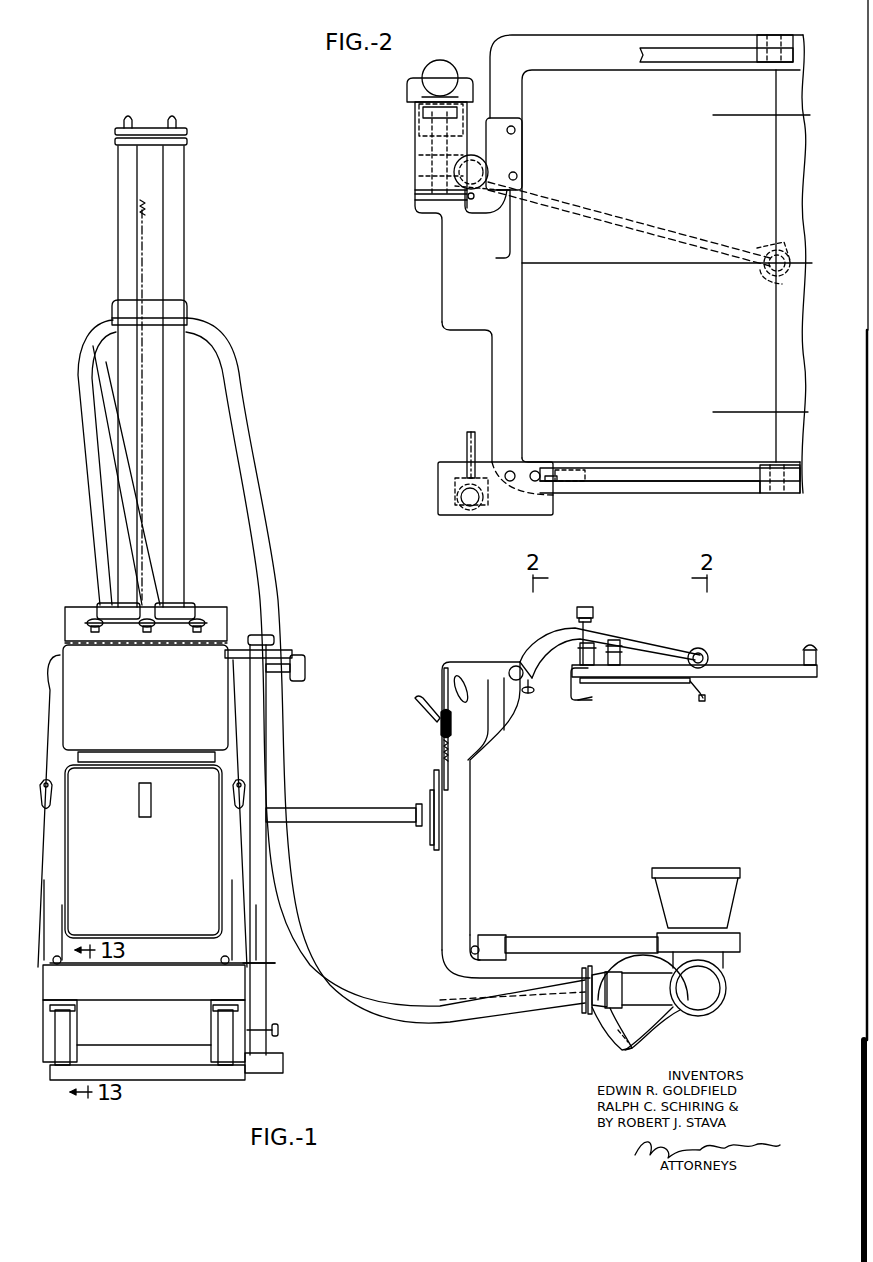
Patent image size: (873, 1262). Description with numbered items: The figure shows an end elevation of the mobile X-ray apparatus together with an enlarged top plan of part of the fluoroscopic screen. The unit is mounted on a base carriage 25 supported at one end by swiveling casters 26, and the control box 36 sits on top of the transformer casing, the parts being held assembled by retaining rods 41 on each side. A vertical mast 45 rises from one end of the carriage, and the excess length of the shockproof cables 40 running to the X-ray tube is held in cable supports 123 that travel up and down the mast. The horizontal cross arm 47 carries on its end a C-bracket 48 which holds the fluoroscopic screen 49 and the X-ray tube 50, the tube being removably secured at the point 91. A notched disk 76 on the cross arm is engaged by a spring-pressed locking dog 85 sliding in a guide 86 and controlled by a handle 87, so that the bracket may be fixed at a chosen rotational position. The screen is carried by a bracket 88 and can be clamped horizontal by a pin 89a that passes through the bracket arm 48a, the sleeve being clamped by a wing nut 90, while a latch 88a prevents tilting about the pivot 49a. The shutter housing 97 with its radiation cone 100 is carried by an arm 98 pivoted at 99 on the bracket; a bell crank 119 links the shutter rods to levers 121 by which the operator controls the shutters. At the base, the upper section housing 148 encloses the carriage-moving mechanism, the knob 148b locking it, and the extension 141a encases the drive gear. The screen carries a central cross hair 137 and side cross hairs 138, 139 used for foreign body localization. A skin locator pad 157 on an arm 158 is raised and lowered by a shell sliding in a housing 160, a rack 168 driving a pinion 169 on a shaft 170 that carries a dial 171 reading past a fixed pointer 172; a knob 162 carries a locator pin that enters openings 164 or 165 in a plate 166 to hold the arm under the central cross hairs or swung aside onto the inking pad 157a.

In FIG. 1, the vertical mast 45 is at (180, 182).
In FIG. 1, the cable support 123 is at (183, 311).
In FIG. 1, the shockproof cable 40 is at (118, 505).
In FIG. 1, the control box 36 is at (145, 682).
In FIG. 1, the retaining rod 41 is at (53, 723).
In FIG. 1, the upper section housing 148 is at (258, 851).
In FIG. 1, the knob 148b is at (305, 673).
In FIG. 1, the base carriage 25 is at (142, 970).
In FIG. 1, the swiveling caster 26 is at (62, 1030).
In FIG. 1, the extension 141a is at (275, 1067).
In FIG. 1, the horizontal cross arm 47 is at (326, 817).
In FIG. 1, the disk 76 is at (431, 806).
In FIG. 1, the locking dog 85 is at (435, 780).
In FIG. 1, the handle 87 is at (444, 690).
In FIG. 1, the lever 121 is at (420, 702).
In FIG. 1, the guide 86 is at (455, 722).
In FIG. 1, the C-bracket 48 is at (470, 810).
In FIG. 1, the pin 89a is at (510, 668).
In FIG. 1, the screen bracket 88 is at (542, 652).
In FIG. 2, the screen bracket 88 is at (695, 52).
In FIG. 1, the manipulating knob 162 is at (583, 607).
In FIG. 1, the latch 88a is at (620, 648).
In FIG. 2, the latch 88a is at (580, 468).
In FIG. 1, the pivot 49a is at (706, 654).
In FIG. 2, the pivot 49a is at (772, 494).
In FIG. 1, the fluoroscopic screen 49 is at (768, 680).
In FIG. 2, the fluoroscopic screen 49 is at (686, 483).
In FIG. 1, the skin locator pad 157 is at (702, 700).
In FIG. 2, the skin locator pad 157 is at (455, 494).
In FIG. 1, the inking pad 157a is at (590, 702).
In FIG. 2, the inking pad 157a is at (440, 512).
In FIG. 1, the wing nut 90 is at (528, 697).
In FIG. 1, the bracket arm 48a is at (506, 682).
In FIG. 1, the pivot 99 is at (466, 946).
In FIG. 1, the bell crank 119 is at (490, 937).
In FIG. 1, the arm 98 is at (541, 940).
In FIG. 1, the tube mounting point 91 is at (585, 967).
In FIG. 1, the radiation cone 100 is at (725, 878).
In FIG. 1, the shutter housing 97 is at (735, 945).
In FIG. 1, the X-ray tube 50 is at (715, 1000).
In FIG. 2, the fixed pointer 172 is at (438, 110).
In FIG. 2, the dial 171 is at (423, 114).
In FIG. 2, the shaft 170 is at (423, 136).
In FIG. 2, the rack 168 is at (440, 158).
In FIG. 2, the pinion 169 is at (440, 178).
In FIG. 2, the housing 160 is at (418, 190).
In FIG. 2, the opening 165 is at (470, 197).
In FIG. 2, the opening 164 is at (492, 177).
In FIG. 2, the plate 166 is at (488, 197).
In FIG. 2, the arm 158 is at (703, 240).
In FIG. 2, the side cross hair 139 is at (775, 115).
In FIG. 2, the central cross hair 137 is at (772, 270).
In FIG. 2, the side cross hair 138 is at (775, 412).